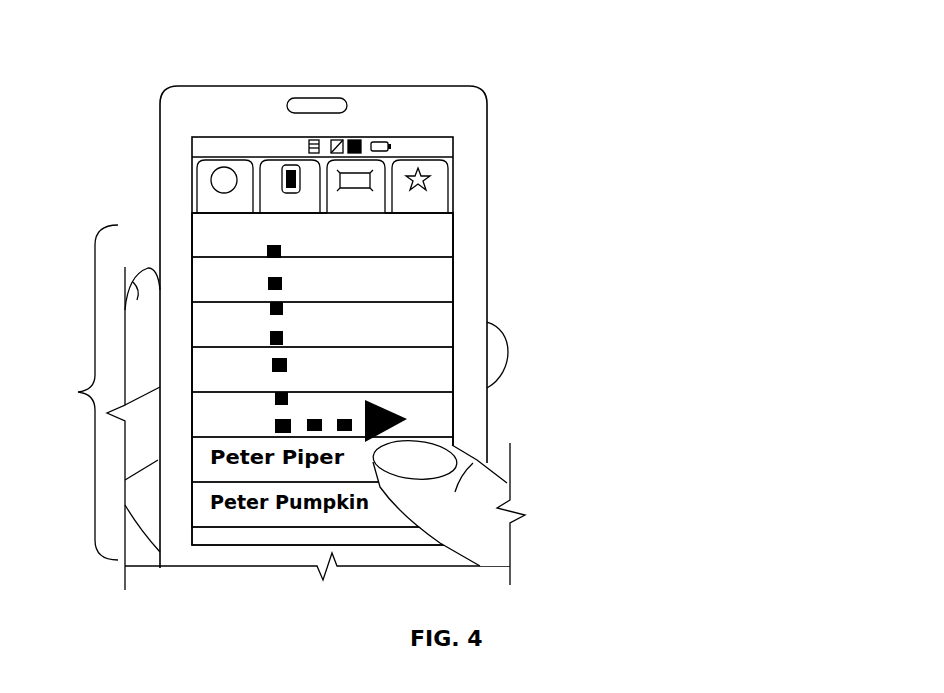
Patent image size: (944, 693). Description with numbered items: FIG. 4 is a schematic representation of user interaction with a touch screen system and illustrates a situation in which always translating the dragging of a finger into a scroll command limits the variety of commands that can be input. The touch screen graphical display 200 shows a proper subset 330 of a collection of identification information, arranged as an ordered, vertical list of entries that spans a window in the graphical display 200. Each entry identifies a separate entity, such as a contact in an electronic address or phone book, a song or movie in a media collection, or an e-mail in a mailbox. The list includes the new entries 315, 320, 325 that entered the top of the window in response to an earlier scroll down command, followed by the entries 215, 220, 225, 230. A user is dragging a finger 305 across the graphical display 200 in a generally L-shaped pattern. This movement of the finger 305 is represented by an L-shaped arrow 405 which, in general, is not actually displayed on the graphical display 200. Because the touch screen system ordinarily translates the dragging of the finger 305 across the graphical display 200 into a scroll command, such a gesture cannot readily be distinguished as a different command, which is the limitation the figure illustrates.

The touch screen graphical display 200 is at (562, 71).
The entry 230 is at (267, 515).
The entry 225 is at (220, 468).
The new entry 315 is at (440, 243).
The L-shaped arrow 405 is at (268, 252).
The new entry 320 is at (443, 287).
The new entry 325 is at (443, 326).
The entry 215 is at (443, 374).
The entry 220 is at (443, 424).
The proper subset 330 is at (78, 392).
The finger 305 is at (472, 552).